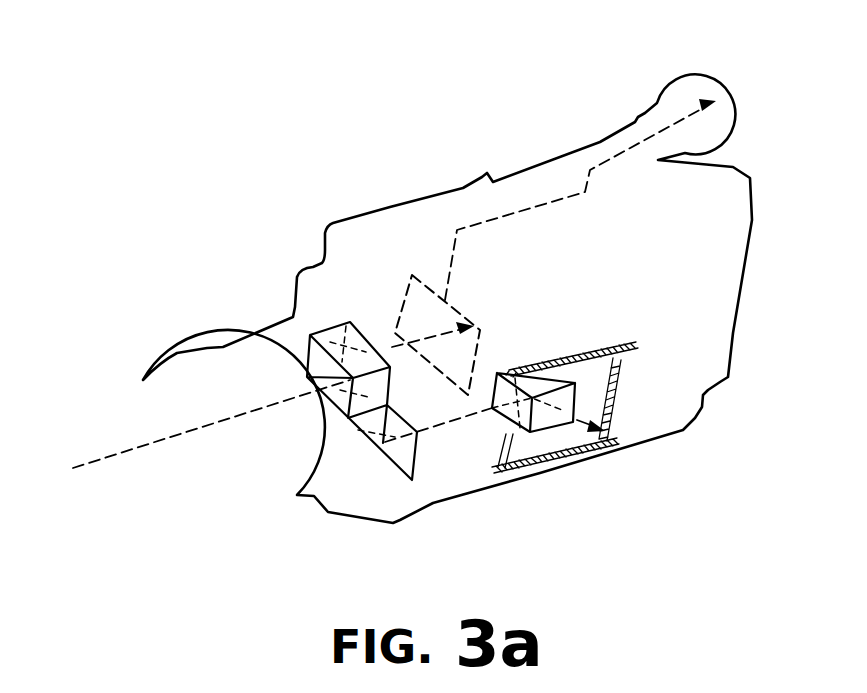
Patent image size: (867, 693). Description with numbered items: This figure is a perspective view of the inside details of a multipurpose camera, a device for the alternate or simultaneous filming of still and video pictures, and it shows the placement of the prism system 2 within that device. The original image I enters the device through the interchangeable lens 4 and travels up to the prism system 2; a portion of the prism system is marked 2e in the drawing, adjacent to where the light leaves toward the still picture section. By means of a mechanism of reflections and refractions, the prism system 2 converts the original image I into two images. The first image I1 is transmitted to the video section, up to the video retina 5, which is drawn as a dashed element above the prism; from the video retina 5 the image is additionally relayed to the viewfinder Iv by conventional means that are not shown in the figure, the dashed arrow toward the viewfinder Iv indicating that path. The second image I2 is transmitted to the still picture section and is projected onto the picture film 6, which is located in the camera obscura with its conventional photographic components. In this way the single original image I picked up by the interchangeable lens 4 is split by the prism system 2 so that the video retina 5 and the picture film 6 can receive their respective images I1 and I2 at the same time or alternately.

The prism system 2 is at (351, 322).
The exit face of optical block 2e is at (514, 370).
The interchangeable lens 4 is at (238, 378).
The video retina 5 is at (421, 283).
The picture film 6 is at (512, 435).
The original image I is at (68, 489).
The first image I1 is at (490, 276).
The second image I2 is at (638, 378).
The viewfinder image Iv is at (742, 61).